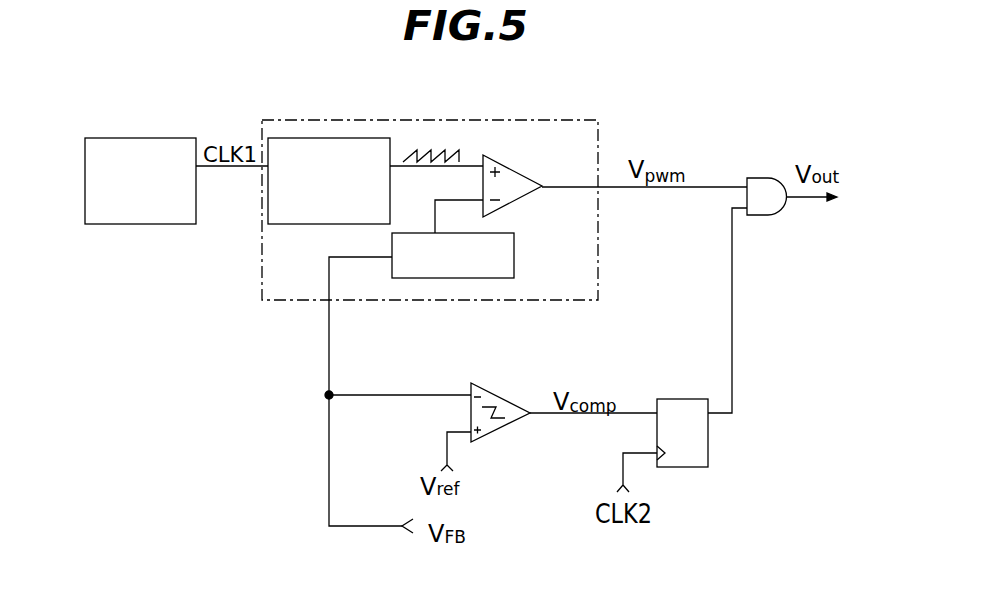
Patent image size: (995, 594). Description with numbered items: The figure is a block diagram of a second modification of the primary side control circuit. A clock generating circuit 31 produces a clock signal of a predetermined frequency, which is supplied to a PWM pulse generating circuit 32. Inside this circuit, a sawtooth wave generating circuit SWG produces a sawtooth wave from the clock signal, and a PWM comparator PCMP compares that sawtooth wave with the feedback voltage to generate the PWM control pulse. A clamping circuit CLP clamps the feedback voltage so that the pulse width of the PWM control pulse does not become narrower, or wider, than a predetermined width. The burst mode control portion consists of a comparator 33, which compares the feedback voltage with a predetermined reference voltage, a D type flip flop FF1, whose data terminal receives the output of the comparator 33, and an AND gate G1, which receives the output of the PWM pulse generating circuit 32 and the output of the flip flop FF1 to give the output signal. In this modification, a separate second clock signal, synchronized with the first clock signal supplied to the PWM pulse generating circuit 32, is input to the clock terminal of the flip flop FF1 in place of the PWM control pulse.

The clock generating circuit 31 is at (135, 137).
The PWM pulse generating circuit 32 is at (485, 120).
The comparator 33 is at (498, 402).
The sawtooth wave generating circuit SWG is at (330, 137).
The PWM comparator PCMP is at (535, 184).
The clamping circuit CLP is at (430, 278).
The AND gate G1 is at (757, 178).
The D type flip flop FF1 is at (682, 467).